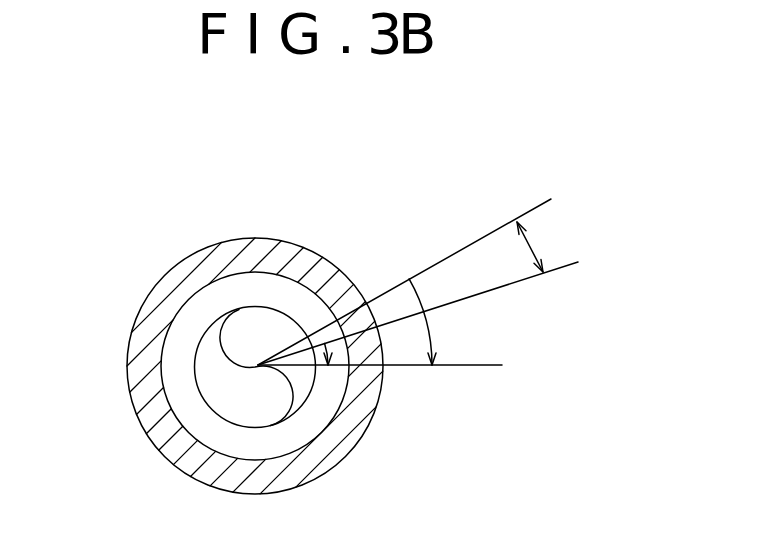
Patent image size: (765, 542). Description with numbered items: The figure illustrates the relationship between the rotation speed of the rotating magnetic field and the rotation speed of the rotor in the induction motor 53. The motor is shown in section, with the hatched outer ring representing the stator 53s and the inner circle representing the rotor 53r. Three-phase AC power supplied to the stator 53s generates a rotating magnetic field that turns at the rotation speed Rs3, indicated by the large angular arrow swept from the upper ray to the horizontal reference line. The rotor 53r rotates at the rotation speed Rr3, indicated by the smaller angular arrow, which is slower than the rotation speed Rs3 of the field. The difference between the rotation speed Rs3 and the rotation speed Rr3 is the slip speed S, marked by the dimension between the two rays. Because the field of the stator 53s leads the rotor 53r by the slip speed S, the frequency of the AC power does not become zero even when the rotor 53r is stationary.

The induction motor 53 is at (229, 300).
The stator 53s is at (241, 238).
The rotor 53r is at (207, 333).
The slip speed S is at (535, 243).
The rotation speed of the rotating magnetic field Rs3 is at (430, 327).
The rotation speed of the rotor Rr3 is at (341, 340).